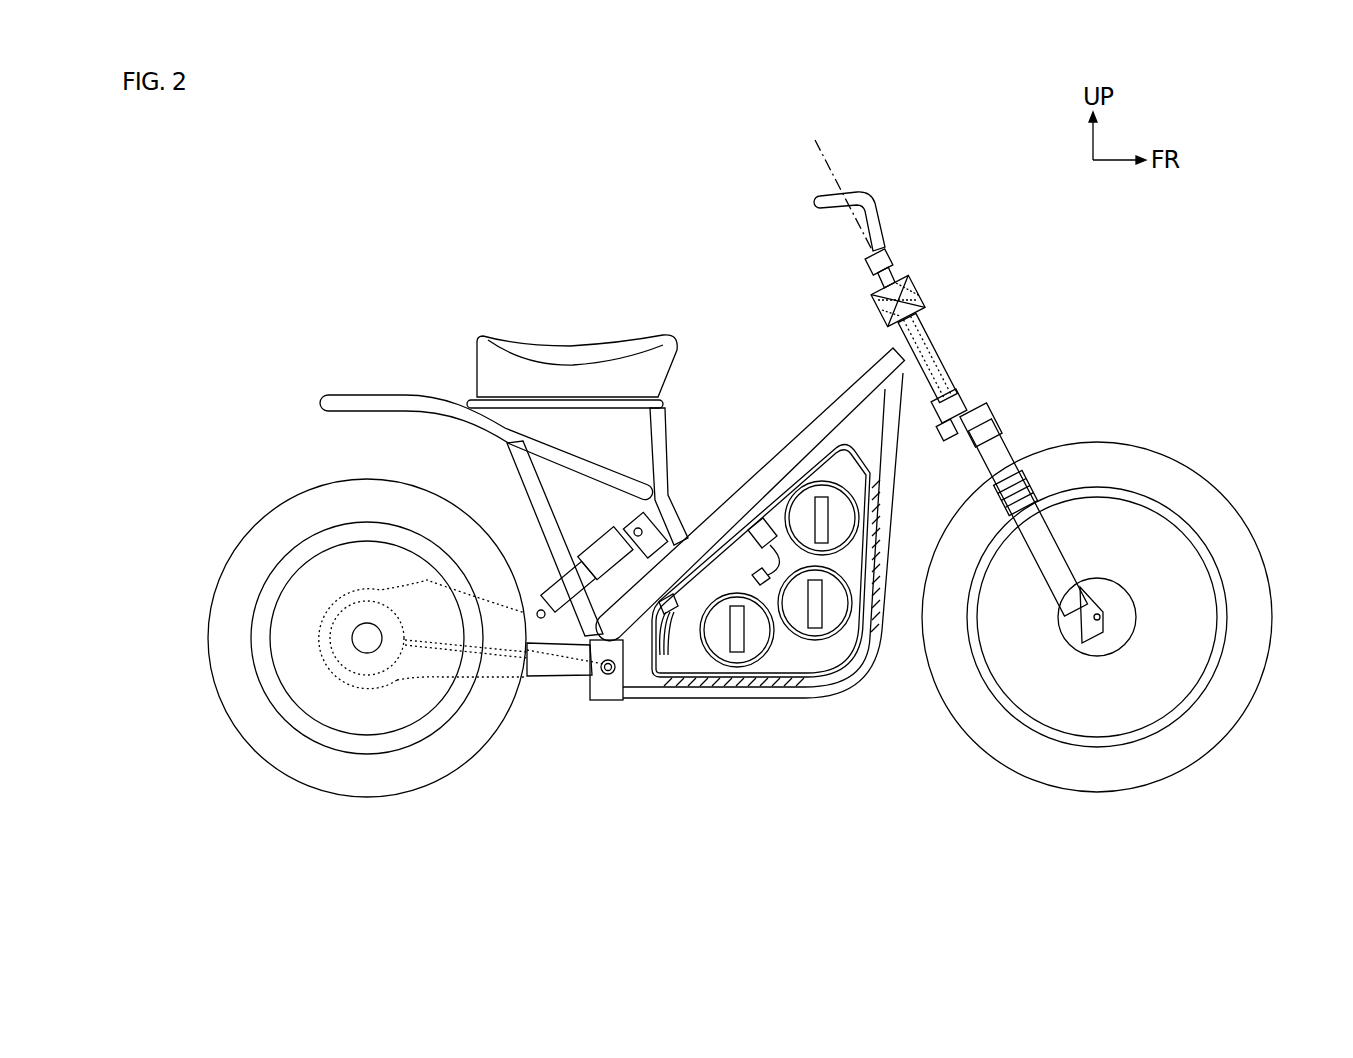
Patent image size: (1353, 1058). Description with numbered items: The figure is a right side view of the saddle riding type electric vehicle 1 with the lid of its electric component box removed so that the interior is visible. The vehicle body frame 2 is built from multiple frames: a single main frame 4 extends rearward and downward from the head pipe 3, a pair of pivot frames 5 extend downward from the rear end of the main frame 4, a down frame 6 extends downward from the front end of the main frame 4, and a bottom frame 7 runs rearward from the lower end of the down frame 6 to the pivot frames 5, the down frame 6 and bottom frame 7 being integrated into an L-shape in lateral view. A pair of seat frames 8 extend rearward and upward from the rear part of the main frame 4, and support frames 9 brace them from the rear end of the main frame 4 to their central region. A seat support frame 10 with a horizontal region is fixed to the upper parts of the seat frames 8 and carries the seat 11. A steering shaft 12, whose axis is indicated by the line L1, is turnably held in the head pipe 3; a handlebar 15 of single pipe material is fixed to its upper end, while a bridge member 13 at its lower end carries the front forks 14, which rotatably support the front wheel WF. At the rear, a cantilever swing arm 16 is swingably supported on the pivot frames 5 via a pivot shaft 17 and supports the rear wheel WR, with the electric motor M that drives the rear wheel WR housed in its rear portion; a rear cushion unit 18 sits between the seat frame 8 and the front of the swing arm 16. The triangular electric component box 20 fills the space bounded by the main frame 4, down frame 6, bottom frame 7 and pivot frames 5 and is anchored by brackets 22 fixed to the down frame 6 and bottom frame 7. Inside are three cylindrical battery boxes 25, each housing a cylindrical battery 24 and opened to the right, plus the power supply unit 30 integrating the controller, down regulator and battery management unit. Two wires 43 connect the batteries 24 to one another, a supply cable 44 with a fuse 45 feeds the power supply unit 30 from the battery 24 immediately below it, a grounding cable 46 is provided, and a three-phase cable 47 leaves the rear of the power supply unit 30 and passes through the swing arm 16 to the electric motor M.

The saddle riding type electric vehicle 1 is at (440, 190).
The vehicle body frame 2 is at (814, 405).
The head pipe 3 is at (937, 338).
The main frame 4 is at (793, 442).
The pivot frames 5 is at (608, 700).
The down frame 6 is at (878, 632).
The bottom frame 7 is at (733, 699).
The seat frames 8 is at (382, 395).
The support frames 9 is at (523, 480).
The seat support frame 10 is at (517, 399).
The seat 11 is at (553, 337).
The steering shaft 12 is at (950, 376).
The bridge member 13 is at (988, 413).
The front forks 14 is at (1048, 547).
The handlebar 15 is at (881, 220).
The swing arm 16 is at (530, 690).
The pivot shaft 17 is at (603, 673).
The rear cushion unit 18 is at (598, 548).
The electric component box 20 is at (850, 665).
The brackets 22 is at (878, 517).
The battery 24 is at (845, 505).
The battery boxes 25 is at (843, 481).
The power supply unit 30 is at (775, 537).
The wires 43 is at (866, 555).
The supply cable 44 is at (757, 575).
The fuse 45 is at (701, 545).
The grounding cable 46 is at (777, 538).
The three-phase cable 47 is at (660, 675).
The electric motor M is at (357, 600).
The rear wheel WR is at (252, 728).
The front wheel WF is at (1230, 716).
The axial line of the steering shaft L1 is at (848, 156).